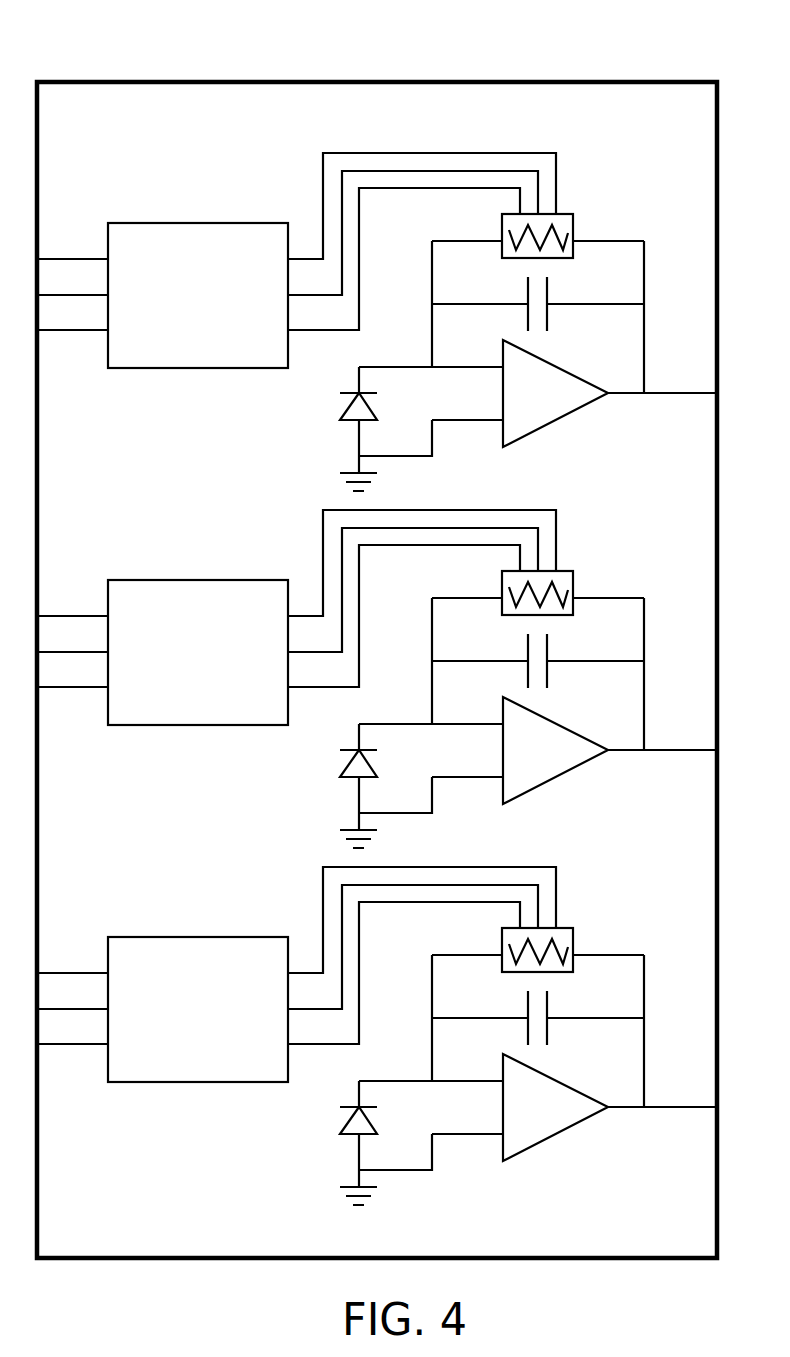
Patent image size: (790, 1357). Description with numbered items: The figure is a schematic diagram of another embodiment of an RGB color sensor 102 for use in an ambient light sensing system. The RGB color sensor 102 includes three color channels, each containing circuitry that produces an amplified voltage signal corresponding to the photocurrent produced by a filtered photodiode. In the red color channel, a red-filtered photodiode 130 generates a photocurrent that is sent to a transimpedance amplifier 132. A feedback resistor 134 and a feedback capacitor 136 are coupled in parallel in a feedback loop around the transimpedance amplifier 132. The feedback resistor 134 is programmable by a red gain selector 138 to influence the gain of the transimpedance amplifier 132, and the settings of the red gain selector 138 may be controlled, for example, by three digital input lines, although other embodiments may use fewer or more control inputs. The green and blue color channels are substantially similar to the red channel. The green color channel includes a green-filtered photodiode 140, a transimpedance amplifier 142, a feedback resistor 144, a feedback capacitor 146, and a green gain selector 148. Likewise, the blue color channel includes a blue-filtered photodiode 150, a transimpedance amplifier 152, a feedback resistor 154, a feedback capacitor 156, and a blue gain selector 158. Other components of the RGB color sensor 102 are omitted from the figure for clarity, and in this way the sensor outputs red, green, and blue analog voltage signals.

The RGB color sensor 102 is at (114, 80).
The red-filtered photodiode 130 is at (344, 400).
The transimpedance amplifier 132 is at (548, 425).
The feedback resistor 134 is at (574, 212).
The feedback capacitor 136 is at (548, 316).
The red gain selector 138 is at (180, 223).
The green-filtered photodiode 140 is at (323, 797).
The transimpedance amplifier 142 is at (538, 760).
The feedback resistor 144 is at (561, 578).
The feedback capacitor 146 is at (538, 668).
The green gain selector 148 is at (198, 620).
The blue-filtered photodiode 150 is at (323, 1154).
The transimpedance amplifier 152 is at (538, 1117).
The feedback resistor 154 is at (561, 935).
The feedback capacitor 156 is at (538, 1025).
The blue gain selector 158 is at (198, 977).